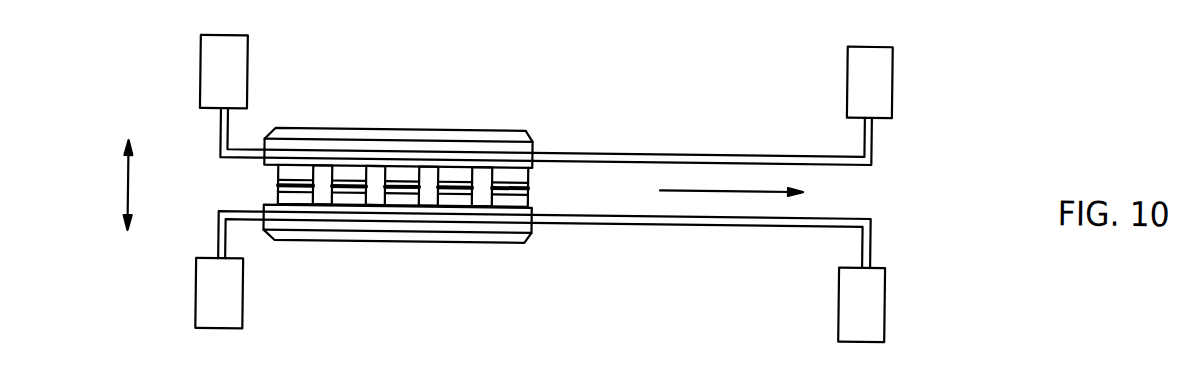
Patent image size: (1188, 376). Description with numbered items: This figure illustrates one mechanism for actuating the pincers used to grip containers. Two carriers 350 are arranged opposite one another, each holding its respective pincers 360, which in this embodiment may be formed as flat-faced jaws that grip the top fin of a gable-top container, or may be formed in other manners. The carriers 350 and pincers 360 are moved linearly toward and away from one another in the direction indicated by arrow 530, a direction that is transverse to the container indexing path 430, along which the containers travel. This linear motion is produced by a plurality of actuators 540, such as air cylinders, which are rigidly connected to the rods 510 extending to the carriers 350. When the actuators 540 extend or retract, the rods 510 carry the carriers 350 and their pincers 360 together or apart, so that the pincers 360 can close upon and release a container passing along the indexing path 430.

The carrier 350 is at (405, 131).
The pincer 360 is at (278, 202).
The rod 510 is at (605, 152).
The actuator 540 is at (237, 67).
The arrow 530 is at (128, 188).
The container indexing path 430 is at (718, 188).